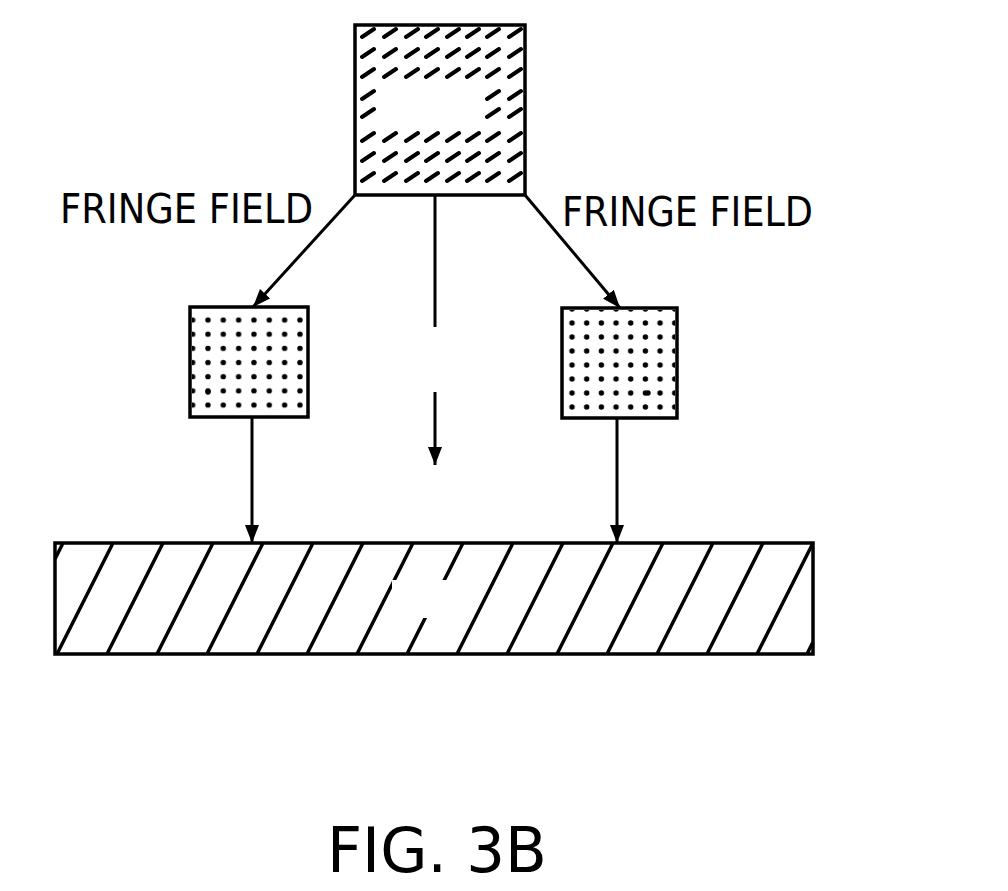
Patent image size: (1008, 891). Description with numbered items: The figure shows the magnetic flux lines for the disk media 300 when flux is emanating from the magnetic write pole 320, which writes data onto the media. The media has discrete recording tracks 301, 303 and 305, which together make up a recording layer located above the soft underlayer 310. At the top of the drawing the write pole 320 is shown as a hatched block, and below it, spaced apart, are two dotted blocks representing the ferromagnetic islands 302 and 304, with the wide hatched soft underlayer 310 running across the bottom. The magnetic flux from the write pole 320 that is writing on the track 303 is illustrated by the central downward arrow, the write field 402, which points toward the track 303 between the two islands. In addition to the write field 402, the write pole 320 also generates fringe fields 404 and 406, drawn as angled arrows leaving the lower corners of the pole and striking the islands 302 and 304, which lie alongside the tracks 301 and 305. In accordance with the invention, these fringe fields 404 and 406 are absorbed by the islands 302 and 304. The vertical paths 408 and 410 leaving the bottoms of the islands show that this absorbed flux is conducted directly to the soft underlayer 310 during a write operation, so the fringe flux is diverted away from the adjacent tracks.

The disk media 300 is at (882, 485).
The discrete recording track 301 is at (155, 375).
The ferromagnetic island 302 is at (205, 395).
The recording track 303 is at (461, 378).
The ferromagnetic island 304 is at (648, 393).
The discrete recording track 305 is at (768, 380).
The soft underlayer 310 is at (813, 595).
The magnetic write pole 320 is at (525, 98).
The write field 402 is at (435, 257).
The fringe field 404 is at (297, 258).
The fringe field 406 is at (588, 268).
The flux path 408 is at (250, 498).
The flux path 410 is at (618, 495).